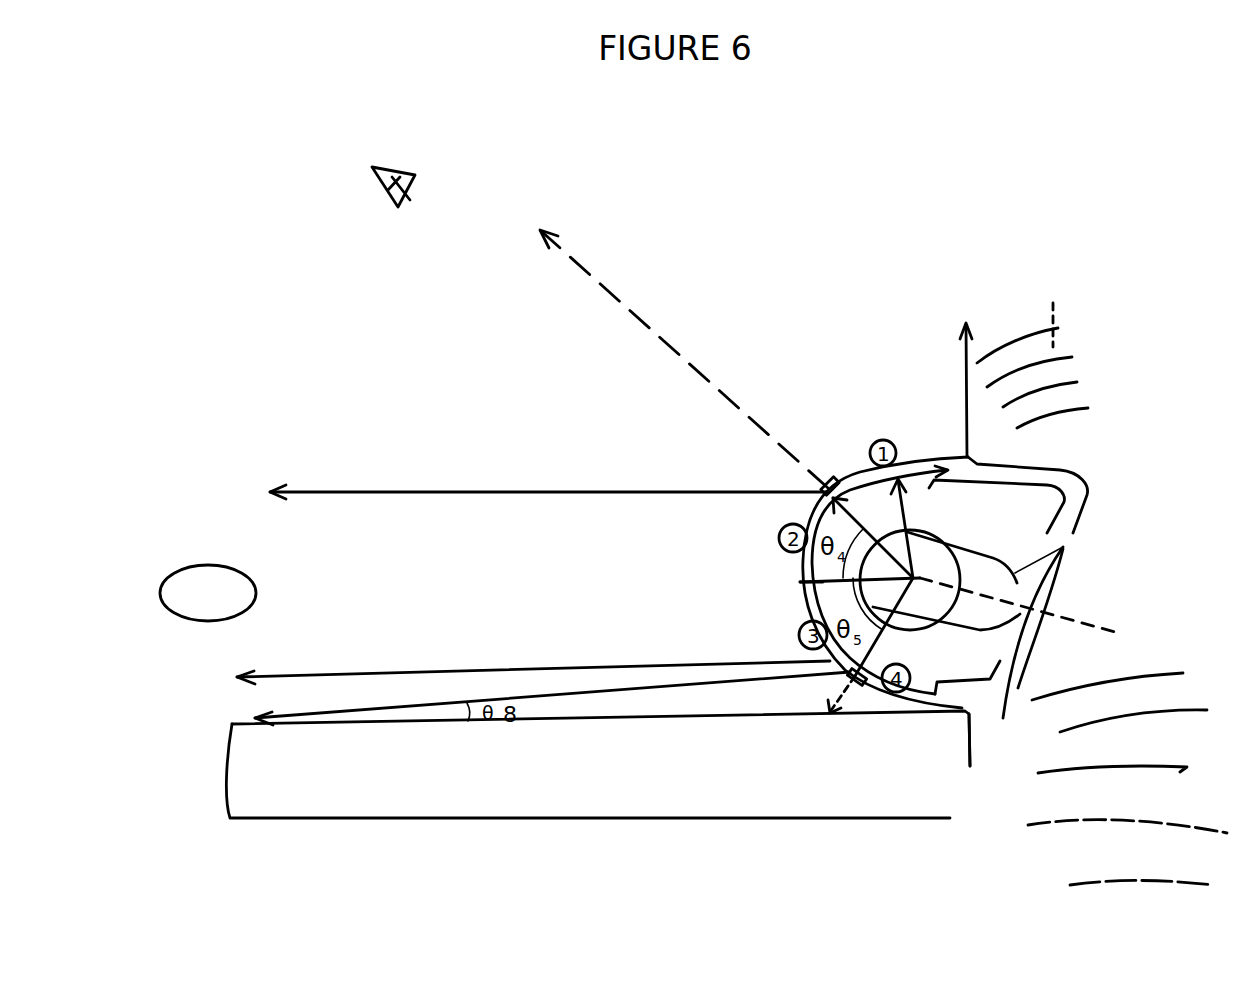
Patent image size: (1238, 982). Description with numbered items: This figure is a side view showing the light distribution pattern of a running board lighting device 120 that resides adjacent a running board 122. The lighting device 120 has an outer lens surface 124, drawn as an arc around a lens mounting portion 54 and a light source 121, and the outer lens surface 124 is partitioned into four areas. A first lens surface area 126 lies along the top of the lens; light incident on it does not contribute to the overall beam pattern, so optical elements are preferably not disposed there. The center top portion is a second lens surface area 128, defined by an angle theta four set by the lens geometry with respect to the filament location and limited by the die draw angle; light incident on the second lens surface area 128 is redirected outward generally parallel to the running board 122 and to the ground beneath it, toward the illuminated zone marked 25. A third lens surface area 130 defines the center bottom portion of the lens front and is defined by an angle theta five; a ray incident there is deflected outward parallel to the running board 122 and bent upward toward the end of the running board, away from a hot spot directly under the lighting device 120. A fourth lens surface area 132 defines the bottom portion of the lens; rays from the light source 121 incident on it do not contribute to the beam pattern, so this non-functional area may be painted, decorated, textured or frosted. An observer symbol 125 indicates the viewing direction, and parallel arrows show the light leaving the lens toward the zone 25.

The light emitting assembly 25 is at (208, 593).
The lens mounting portion 54 is at (915, 511).
The running board lighting device 120 is at (1087, 450).
The light source 121 is at (1068, 546).
The running board 122 is at (920, 820).
The outer lens surface 124 is at (840, 465).
The observer 125 is at (372, 186).
The first lens surface area 126 is at (906, 437).
The second lens surface area 128 is at (766, 548).
The third lens surface area 130 is at (778, 632).
The fourth lens surface area 132 is at (957, 757).